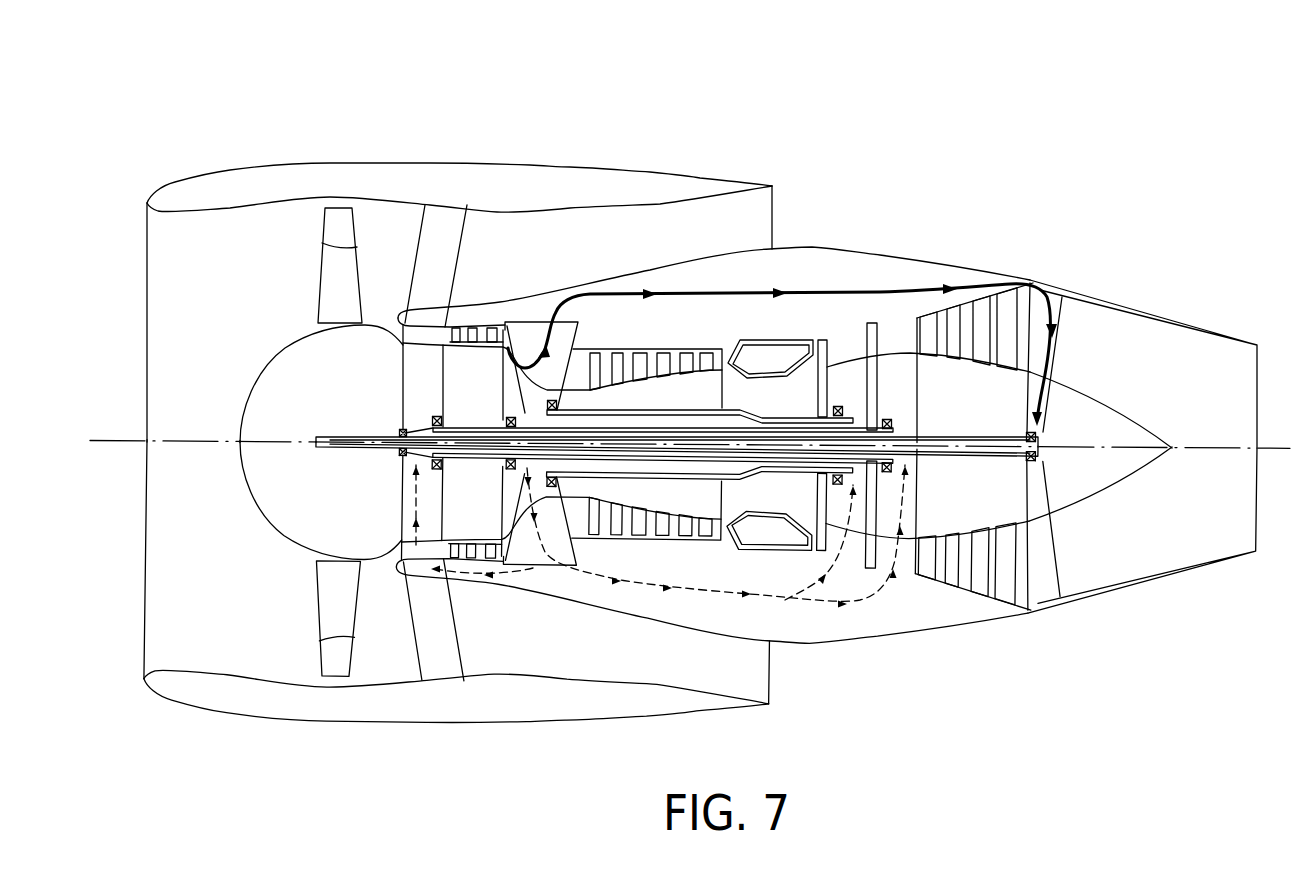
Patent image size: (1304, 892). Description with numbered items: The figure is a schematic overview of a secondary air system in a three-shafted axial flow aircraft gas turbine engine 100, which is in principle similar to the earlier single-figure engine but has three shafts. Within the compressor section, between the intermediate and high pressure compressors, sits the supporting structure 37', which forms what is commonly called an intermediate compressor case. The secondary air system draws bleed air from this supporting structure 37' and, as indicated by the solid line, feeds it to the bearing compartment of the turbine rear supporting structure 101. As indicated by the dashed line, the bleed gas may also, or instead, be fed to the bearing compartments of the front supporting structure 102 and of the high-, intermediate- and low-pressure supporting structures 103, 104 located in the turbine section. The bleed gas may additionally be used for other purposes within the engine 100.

The axial flow aircraft gas turbine engine 100 is at (1124, 116).
The turbine rear supporting structure 101 is at (1043, 488).
The front supporting structure 102 is at (415, 400).
The high-pressure supporting structure 103 is at (843, 500).
The intermediate- and low-pressure supporting structure 104 is at (910, 490).
The supporting structure 37' is at (773, 256).